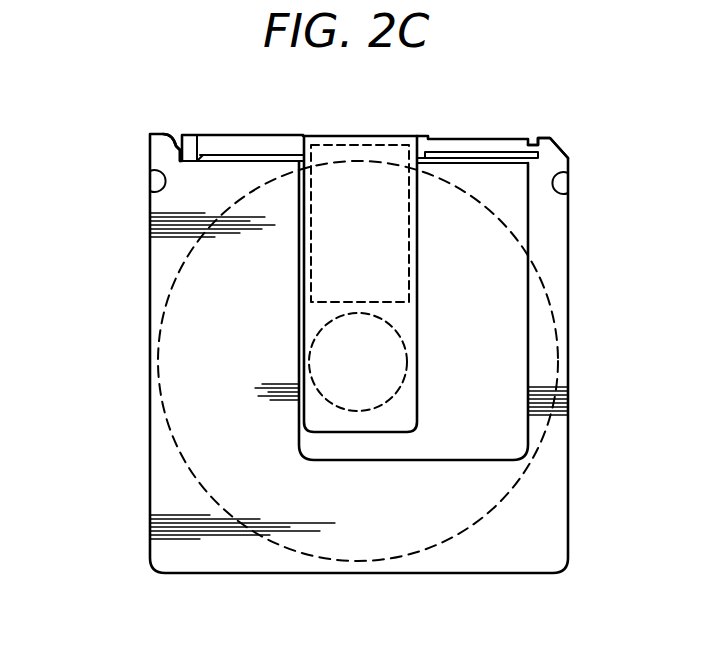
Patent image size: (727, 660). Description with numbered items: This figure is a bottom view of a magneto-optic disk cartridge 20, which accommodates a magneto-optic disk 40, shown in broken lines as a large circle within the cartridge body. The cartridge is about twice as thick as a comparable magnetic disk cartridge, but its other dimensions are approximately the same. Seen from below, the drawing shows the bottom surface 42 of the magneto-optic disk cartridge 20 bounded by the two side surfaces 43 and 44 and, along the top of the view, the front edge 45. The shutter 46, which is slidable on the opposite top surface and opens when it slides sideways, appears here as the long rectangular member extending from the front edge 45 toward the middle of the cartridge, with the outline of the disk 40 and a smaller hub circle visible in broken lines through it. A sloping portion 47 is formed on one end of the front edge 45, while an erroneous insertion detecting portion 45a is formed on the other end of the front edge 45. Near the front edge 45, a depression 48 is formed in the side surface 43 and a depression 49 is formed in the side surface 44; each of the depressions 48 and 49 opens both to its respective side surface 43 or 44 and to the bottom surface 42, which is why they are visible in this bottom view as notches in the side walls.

The magneto-optic disk cartridge 20 is at (486, 77).
The magneto-optic disk 40 is at (568, 350).
The bottom surface 42 is at (160, 508).
The side surface 43 is at (568, 280).
The side surface 44 is at (150, 314).
The front edge 45 is at (462, 140).
The erroneous insertion detecting portion 45a is at (163, 124).
The shutter 46 is at (346, 135).
The sloping portion 47 is at (550, 138).
The depression 48 is at (570, 185).
The depression 49 is at (150, 184).